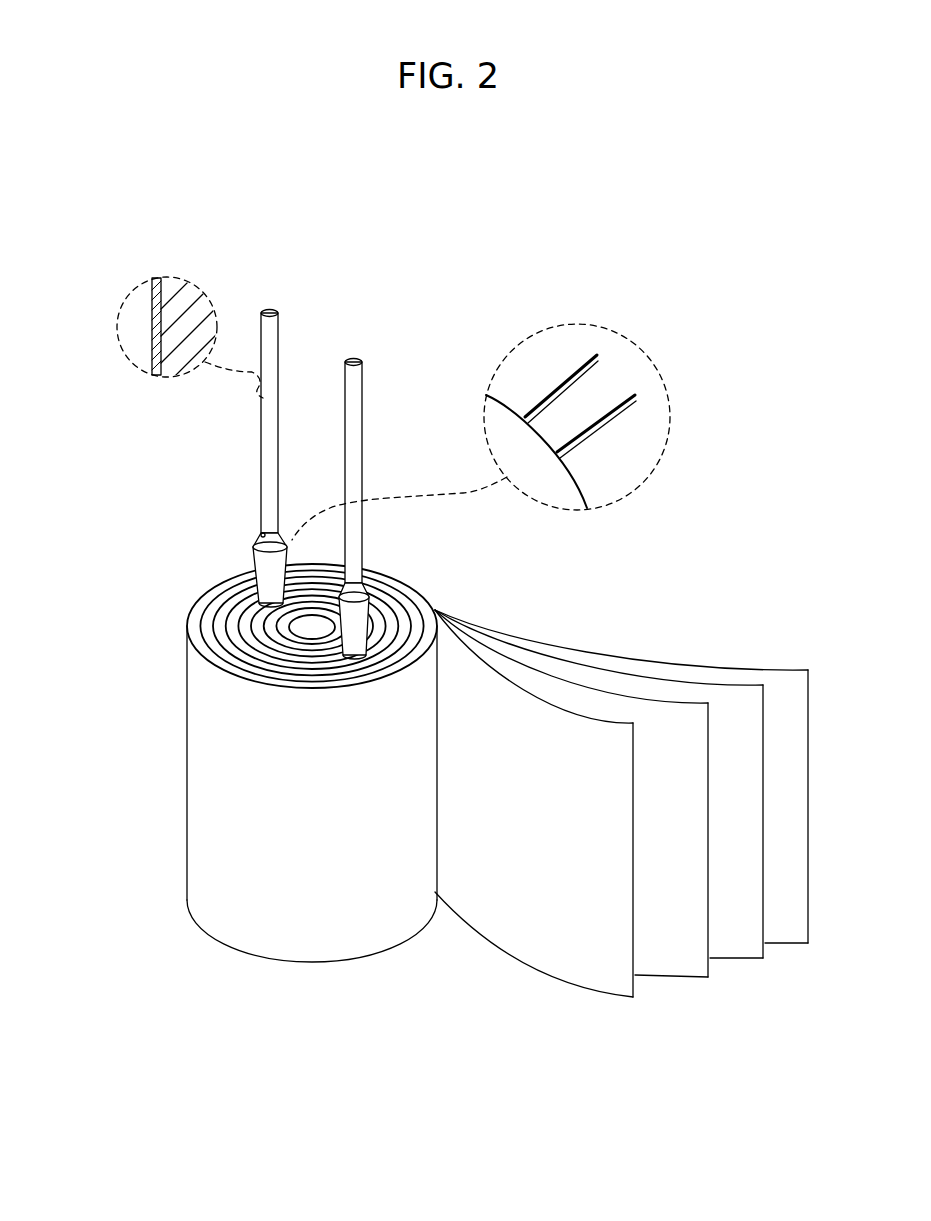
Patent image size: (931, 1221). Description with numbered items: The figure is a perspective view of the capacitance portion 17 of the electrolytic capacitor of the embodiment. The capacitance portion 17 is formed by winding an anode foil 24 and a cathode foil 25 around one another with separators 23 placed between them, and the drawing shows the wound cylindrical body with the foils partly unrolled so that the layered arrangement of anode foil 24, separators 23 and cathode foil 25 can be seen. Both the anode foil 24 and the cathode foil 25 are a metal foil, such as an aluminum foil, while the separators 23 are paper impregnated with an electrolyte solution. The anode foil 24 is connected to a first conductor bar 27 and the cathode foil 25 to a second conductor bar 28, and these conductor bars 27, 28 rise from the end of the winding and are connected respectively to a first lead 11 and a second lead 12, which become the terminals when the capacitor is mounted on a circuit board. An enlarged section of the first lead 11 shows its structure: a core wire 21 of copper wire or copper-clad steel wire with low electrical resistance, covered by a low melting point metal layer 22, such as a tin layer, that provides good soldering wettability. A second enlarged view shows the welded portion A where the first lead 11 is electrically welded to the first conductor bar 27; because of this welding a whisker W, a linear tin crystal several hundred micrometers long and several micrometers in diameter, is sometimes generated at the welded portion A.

The first lead 11 is at (270, 306).
The second lead 12 is at (354, 356).
The capacitance portion 17 is at (100, 438).
The core wire 21 is at (183, 280).
The low melting point metal layer 22 is at (156, 278).
The separators 23 is at (628, 697).
The anode foil 24 is at (535, 975).
The cathode foil 25 is at (742, 960).
The first conductor bar 27 is at (250, 560).
The second conductor bar 28 is at (370, 606).
The welded portion A is at (252, 522).
The whisker W is at (575, 370).